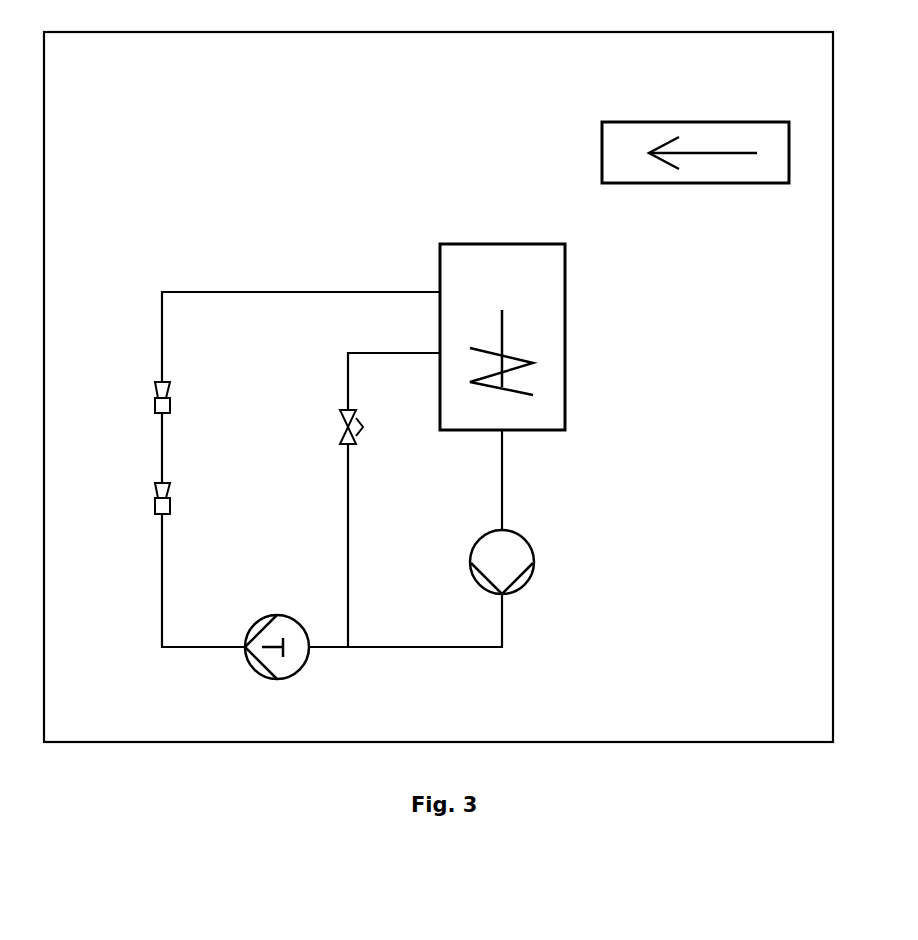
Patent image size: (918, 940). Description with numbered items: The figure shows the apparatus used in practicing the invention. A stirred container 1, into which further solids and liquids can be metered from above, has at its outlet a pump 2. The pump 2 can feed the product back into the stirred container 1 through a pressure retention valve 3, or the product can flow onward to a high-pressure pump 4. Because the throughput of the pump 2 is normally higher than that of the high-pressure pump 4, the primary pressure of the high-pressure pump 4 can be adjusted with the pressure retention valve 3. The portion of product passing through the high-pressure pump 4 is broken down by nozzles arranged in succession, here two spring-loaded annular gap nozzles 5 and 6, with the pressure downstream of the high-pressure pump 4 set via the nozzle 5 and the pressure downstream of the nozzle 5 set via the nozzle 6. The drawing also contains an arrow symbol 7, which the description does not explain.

The stirred container 1 is at (518, 337).
The pump 2 is at (521, 562).
The pressure retention valve 3 is at (369, 427).
The high-pressure pump 4 is at (277, 674).
The spring-loaded annular gap nozzle 5 is at (142, 500).
The spring-loaded annular gap nozzle 6 is at (142, 397).
The flow direction indicator 7 is at (695, 132).